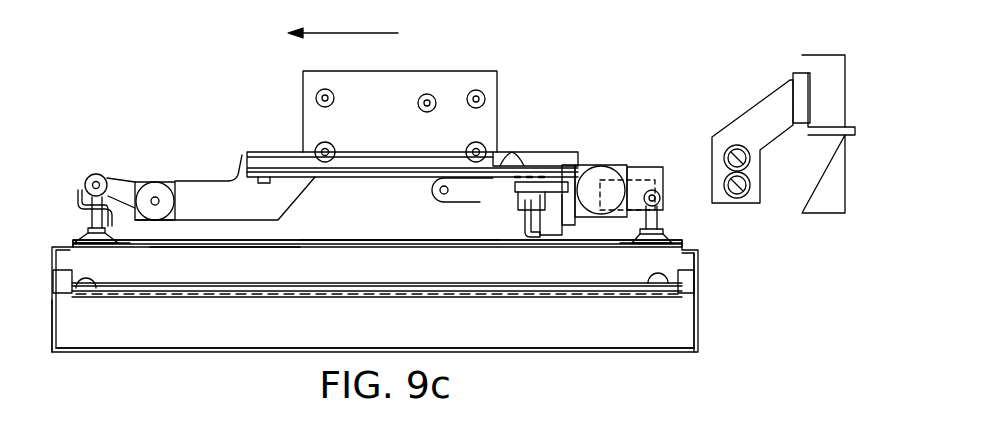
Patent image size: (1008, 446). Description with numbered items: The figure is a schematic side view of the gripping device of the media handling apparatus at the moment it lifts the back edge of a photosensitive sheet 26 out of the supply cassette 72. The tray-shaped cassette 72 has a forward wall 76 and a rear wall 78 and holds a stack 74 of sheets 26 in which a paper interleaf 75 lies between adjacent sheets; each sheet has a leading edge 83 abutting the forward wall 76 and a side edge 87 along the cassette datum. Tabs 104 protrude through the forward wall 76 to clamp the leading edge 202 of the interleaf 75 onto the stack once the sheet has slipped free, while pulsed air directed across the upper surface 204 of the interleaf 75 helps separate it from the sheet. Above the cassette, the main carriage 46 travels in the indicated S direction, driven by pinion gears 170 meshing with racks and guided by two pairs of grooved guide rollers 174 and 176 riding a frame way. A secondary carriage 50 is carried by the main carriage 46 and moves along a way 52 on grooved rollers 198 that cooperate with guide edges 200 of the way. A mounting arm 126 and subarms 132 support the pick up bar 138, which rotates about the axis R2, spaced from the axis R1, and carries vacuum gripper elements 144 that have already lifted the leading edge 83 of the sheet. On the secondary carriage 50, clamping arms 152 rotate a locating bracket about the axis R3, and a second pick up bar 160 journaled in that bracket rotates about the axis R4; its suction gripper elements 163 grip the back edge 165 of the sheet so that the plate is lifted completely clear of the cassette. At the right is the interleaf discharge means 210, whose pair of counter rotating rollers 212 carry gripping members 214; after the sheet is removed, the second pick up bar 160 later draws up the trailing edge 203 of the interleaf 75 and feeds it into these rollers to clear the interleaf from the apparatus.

The direction of travel S is at (340, 33).
The photosensitive media sheet 26 is at (205, 240).
The main carriage 46 is at (400, 71).
The secondary carriage 50 is at (508, 185).
The way 52 is at (241, 160).
The supply cassette 72 is at (103, 363).
The stack 74 is at (325, 271).
The paper interleaf 75 is at (128, 288).
The forward wall 76 is at (52, 318).
The rear wall 78 is at (698, 316).
The leading edge 83 is at (80, 242).
The side edge 87 is at (392, 248).
The tabs 104 is at (72, 280).
The mounting arm 126 is at (268, 206).
The subarms 132 is at (113, 181).
The pick up bar 138 is at (78, 196).
The gripper elements 144 is at (108, 237).
The clamping arms 152 is at (482, 200).
The second pick up bar 160 is at (605, 172).
The suction gripper elements 163 is at (655, 243).
The back edge 165 is at (672, 244).
The pinion gears 170 is at (418, 103).
The guide rollers 174 is at (318, 145).
The guide rollers 176 is at (468, 102).
The rollers 198 is at (512, 165).
The guide edges 200 is at (370, 173).
The leading edge of the interleaf 202 is at (98, 286).
The trailing edge of the interleaf 203 is at (660, 287).
The upper surface of the interleaf 204 is at (260, 292).
The interleaf discharge means 210 is at (698, 124).
The counter rotating rollers 212 is at (724, 156).
The gripping members 214 is at (751, 162).
The first rotational axis R1 is at (93, 177).
The second rotational axis R2 is at (154, 199).
The third rotational axis R3 is at (438, 198).
The fourth rotational axis R4 is at (660, 197).